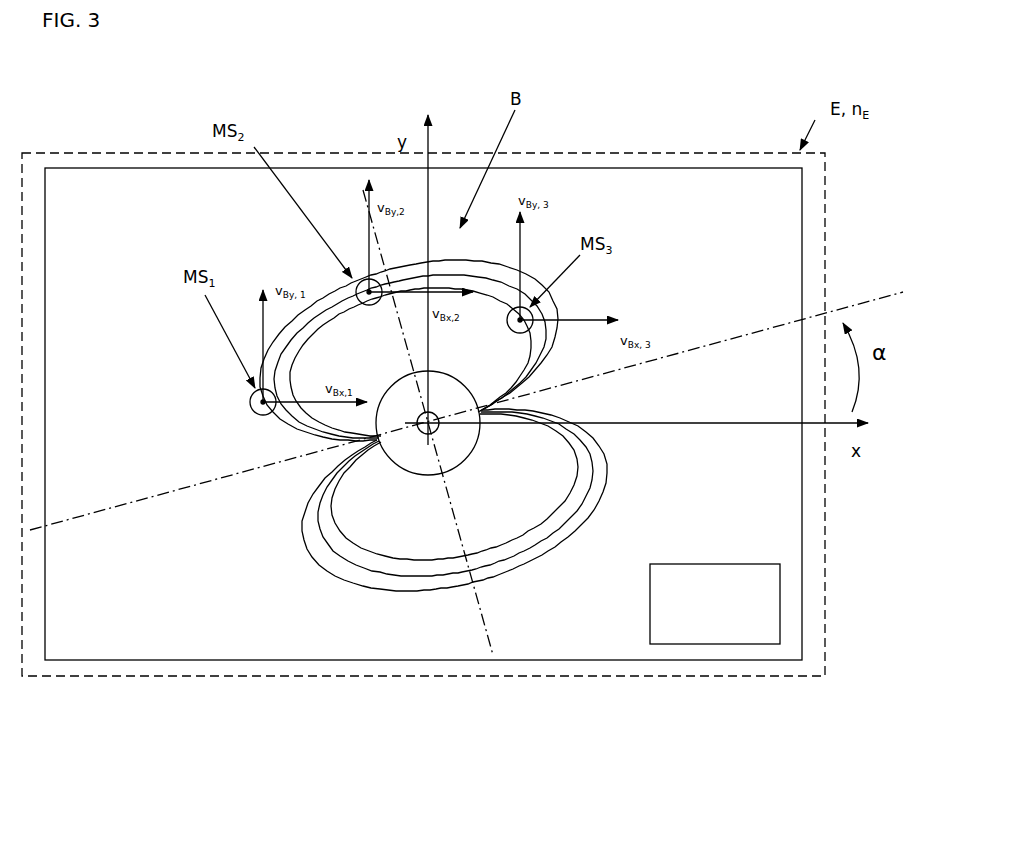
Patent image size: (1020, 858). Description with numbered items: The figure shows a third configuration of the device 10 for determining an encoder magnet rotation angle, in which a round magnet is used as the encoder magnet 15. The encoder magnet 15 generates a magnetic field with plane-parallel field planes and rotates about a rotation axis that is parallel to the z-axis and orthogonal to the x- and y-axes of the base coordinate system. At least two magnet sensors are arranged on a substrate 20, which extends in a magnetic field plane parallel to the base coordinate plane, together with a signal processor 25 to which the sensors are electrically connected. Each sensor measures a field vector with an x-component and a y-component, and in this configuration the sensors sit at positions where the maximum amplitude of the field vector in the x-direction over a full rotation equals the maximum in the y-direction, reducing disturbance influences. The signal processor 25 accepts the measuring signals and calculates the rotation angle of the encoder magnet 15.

The device 10 is at (743, 112).
The encoder magnet 15 is at (420, 435).
The substrate 20 is at (626, 618).
The signal processor 25 is at (715, 604).